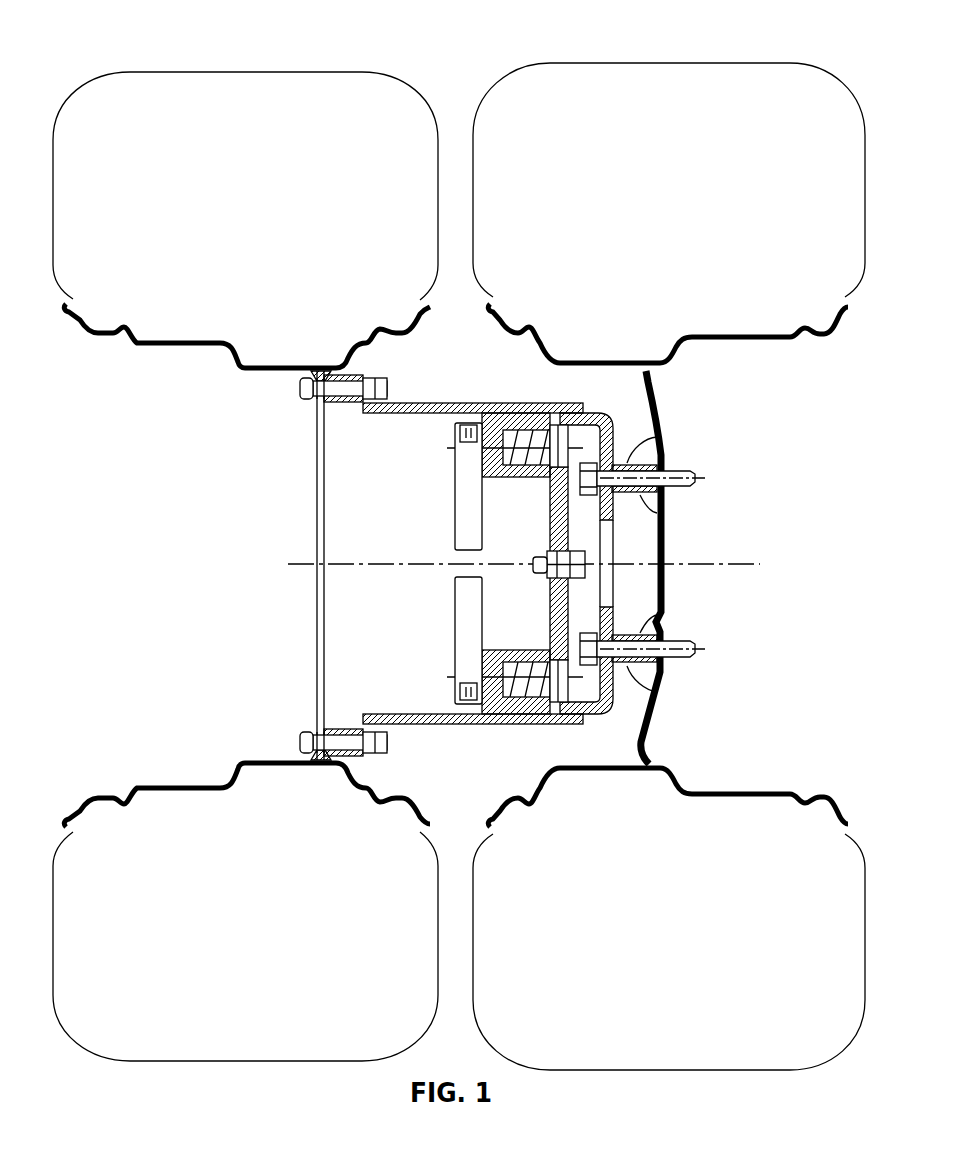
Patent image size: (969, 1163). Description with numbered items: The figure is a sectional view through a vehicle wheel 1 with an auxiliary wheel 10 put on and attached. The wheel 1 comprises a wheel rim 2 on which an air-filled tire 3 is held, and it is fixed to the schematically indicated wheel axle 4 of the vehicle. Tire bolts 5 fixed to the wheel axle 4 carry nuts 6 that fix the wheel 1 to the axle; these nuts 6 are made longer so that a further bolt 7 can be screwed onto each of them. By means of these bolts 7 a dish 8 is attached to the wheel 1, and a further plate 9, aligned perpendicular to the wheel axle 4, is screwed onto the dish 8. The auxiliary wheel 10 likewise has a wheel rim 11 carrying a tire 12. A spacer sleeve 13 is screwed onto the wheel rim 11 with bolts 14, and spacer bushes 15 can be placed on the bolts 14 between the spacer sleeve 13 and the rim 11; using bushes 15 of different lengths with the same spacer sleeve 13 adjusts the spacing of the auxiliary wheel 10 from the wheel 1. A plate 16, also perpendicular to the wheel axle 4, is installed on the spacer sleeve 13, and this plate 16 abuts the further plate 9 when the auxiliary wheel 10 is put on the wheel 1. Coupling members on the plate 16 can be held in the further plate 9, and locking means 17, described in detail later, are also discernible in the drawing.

The wheel 1 is at (669, 538).
The wheel rim 2 is at (663, 372).
The tire 3 is at (634, 80).
The wheel axle 4 is at (740, 566).
The tire bolts 5 is at (696, 475).
The nuts 6 is at (663, 513).
The bolt 7 is at (663, 437).
The dish 8 is at (610, 412).
The further plate 9 is at (573, 590).
The auxiliary wheel 10 is at (245, 530).
The wheel rim 11 is at (238, 370).
The tire 12 is at (296, 86).
The spacer sleeve 13 is at (427, 414).
The bolts 14 is at (300, 393).
The spacer bushes 15 is at (347, 403).
The plate 16 is at (552, 530).
The locking means 17 is at (444, 473).